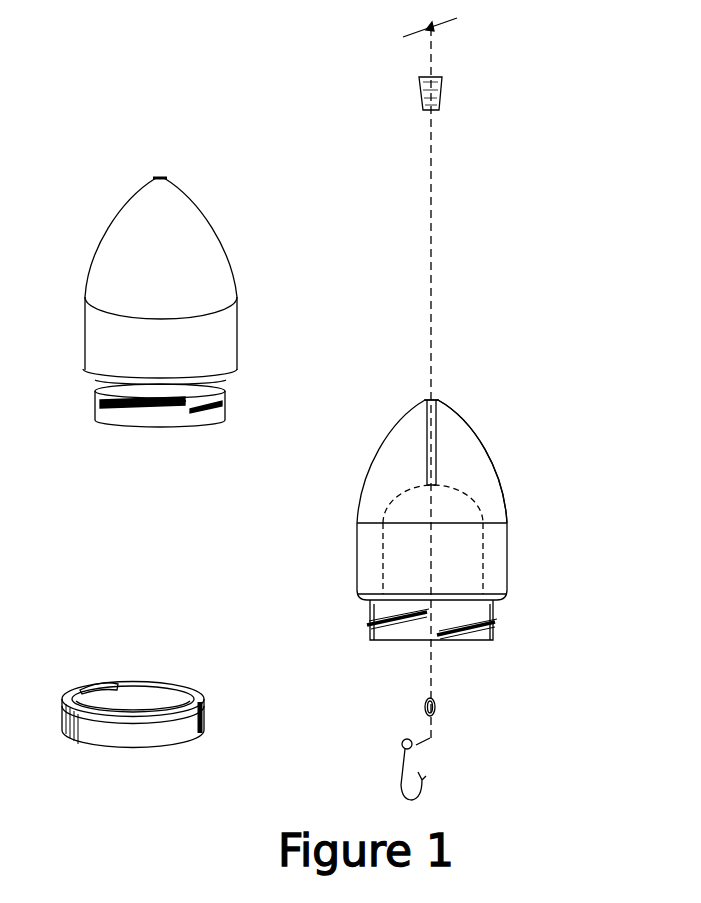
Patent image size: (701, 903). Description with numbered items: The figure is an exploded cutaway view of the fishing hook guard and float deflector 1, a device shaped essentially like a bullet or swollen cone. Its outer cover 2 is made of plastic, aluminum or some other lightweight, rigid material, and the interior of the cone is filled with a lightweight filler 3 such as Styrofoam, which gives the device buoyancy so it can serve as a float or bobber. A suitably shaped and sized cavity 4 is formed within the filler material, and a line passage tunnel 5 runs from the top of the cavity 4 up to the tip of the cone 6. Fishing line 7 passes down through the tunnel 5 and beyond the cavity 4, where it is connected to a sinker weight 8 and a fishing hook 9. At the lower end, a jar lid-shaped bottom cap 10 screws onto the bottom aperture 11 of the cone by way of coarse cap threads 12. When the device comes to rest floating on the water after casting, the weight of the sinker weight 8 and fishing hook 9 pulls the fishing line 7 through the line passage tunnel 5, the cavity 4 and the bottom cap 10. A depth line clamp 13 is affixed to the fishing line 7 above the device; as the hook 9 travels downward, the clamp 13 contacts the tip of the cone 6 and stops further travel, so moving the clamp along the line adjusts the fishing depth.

The fishing hook guard and float deflector 1 is at (187, 278).
The outer cover 2 is at (360, 503).
The lightweight filler 3 is at (492, 482).
The cavity 4 is at (461, 584).
The line passage tunnel 5 is at (438, 443).
The tip of the cone 6 is at (433, 398).
The fishing line 7 is at (437, 240).
The sinker weight 8 is at (437, 705).
The fishing hook 9 is at (403, 756).
The bottom cap 10 is at (202, 735).
The bottom aperture 11 is at (503, 621).
The coarse cap threads 12 is at (100, 407).
The depth line clamp 13 is at (445, 78).